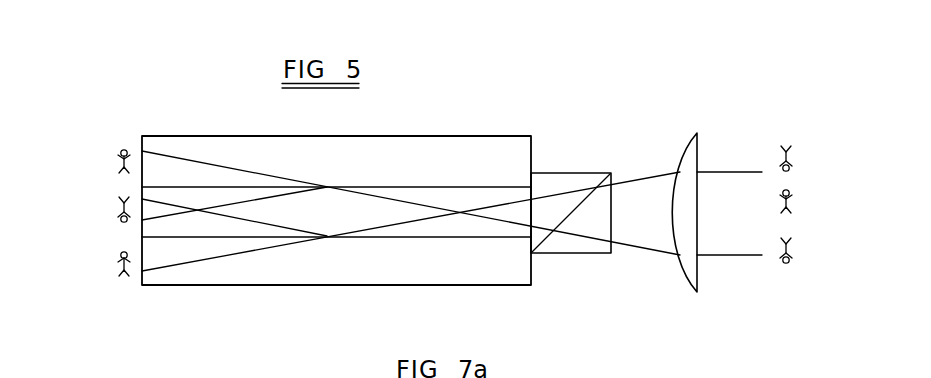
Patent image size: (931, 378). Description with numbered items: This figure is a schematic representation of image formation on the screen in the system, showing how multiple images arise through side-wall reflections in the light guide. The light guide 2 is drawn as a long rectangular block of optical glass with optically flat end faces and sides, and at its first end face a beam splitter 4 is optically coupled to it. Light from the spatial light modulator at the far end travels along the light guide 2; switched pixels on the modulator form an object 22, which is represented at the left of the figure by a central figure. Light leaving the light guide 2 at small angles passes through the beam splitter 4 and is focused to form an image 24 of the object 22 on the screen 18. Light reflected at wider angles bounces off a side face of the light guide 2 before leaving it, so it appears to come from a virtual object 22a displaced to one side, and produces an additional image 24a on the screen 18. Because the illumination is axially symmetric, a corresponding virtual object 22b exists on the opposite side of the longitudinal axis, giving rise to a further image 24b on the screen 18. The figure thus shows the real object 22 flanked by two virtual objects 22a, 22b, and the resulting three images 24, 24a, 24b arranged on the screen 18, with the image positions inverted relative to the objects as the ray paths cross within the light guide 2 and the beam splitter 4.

The light guide 2 is at (445, 187).
The beam splitter 4 is at (540, 250).
The screen 18 is at (682, 158).
The object 22 is at (124, 226).
The virtual object 22a is at (125, 142).
The virtual object 22b is at (124, 282).
The image 24 is at (795, 207).
The additional image 24a is at (773, 263).
The further image 24b is at (786, 142).